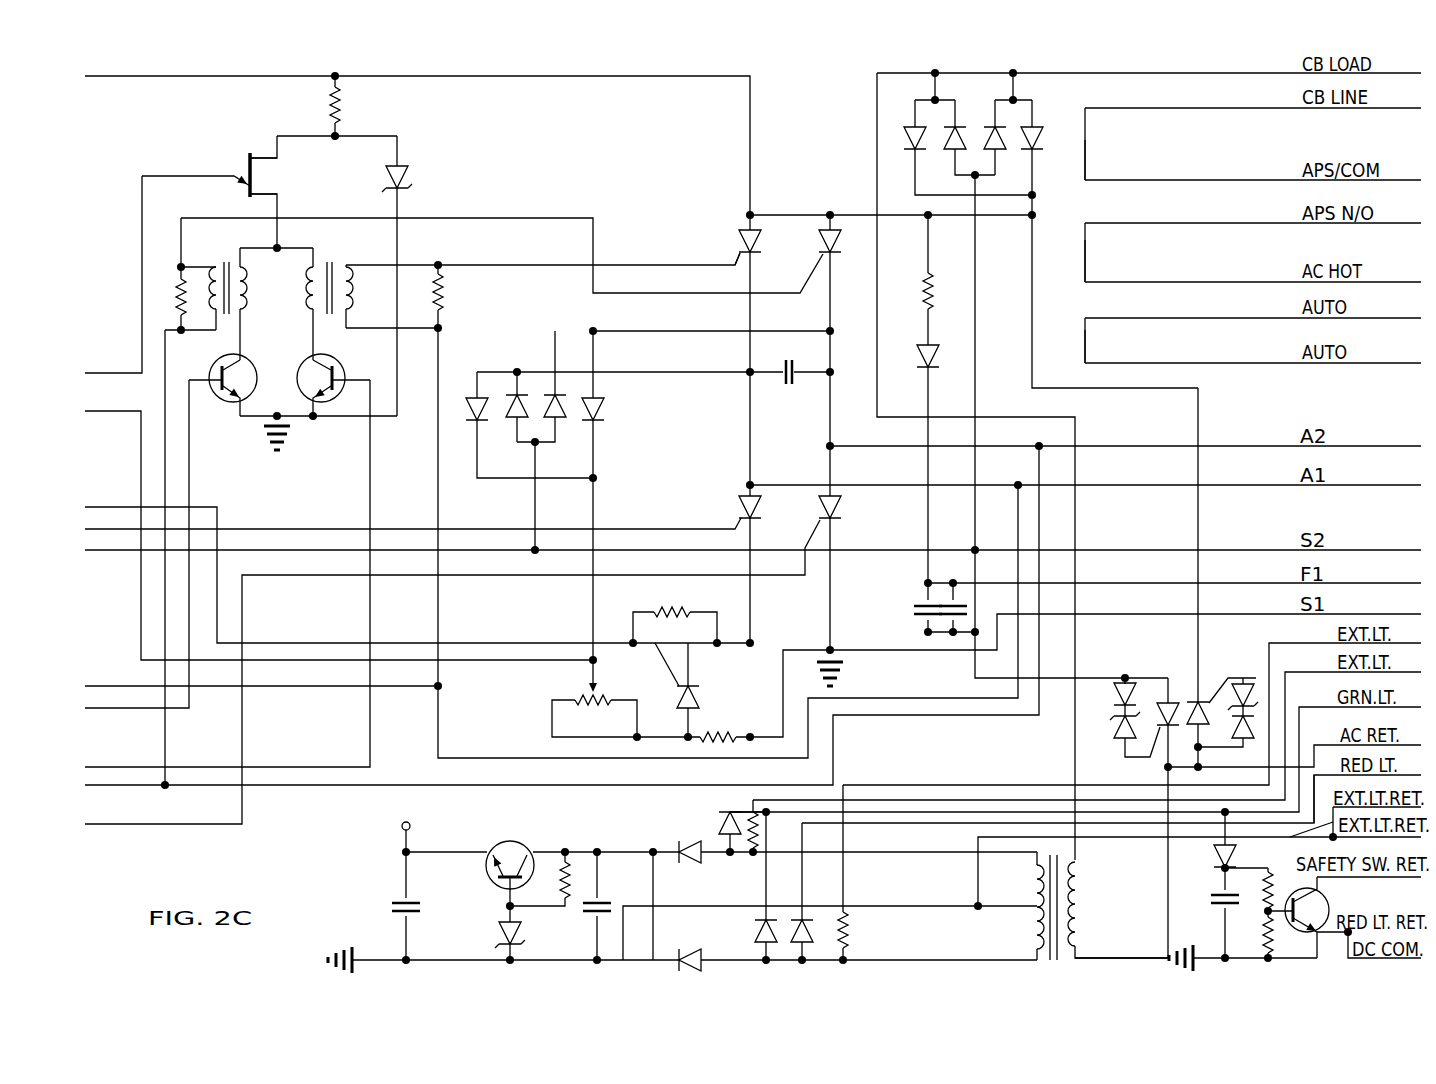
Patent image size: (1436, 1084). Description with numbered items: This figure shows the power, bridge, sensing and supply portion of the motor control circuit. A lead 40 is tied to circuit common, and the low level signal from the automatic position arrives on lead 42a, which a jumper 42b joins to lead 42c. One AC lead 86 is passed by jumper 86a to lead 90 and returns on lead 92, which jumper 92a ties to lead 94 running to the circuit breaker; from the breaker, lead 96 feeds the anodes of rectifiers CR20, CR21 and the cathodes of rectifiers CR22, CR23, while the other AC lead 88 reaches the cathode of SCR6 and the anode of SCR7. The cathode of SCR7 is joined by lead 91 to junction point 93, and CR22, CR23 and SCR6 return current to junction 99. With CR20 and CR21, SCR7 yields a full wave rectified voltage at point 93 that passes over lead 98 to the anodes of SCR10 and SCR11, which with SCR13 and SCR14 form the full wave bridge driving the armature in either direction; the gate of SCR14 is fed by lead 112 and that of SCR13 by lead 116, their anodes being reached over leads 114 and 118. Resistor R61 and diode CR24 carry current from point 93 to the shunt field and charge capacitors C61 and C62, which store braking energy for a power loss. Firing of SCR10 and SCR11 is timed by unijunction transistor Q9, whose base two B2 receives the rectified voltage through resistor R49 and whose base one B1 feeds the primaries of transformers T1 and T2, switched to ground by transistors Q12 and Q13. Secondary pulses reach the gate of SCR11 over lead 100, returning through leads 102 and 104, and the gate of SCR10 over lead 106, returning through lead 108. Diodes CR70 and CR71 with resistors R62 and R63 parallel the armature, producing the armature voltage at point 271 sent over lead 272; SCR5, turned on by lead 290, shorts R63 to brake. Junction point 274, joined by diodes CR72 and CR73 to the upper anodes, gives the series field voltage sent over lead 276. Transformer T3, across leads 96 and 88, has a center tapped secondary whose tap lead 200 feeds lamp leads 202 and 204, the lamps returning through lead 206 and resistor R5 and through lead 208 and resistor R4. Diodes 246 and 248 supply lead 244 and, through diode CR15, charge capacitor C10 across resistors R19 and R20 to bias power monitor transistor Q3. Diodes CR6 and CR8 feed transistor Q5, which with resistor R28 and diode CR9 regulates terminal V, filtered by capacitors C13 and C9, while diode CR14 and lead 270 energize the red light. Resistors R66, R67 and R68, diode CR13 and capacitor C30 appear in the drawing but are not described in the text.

The lead 98 is at (115, 78).
The resistor R49 is at (342, 108).
The unijunction transistor Q9 is at (239, 160).
The base 2 B2 is at (279, 159).
The base 1 B1 is at (279, 195).
The zener diode CR13 is at (402, 168).
The lead 100 is at (503, 218).
The lead 106 is at (507, 264).
The resistor R67 is at (176, 280).
The lead 102 is at (192, 346).
The transformer T1 is at (226, 255).
The second transformer T2 is at (331, 256).
The resistor R66 is at (445, 288).
The grounded emitter transistor Q12 is at (256, 362).
The grounded emitter transistor Q13 is at (340, 360).
The lead 272 is at (95, 411).
The lead 290 is at (128, 507).
The lead 112 is at (265, 529).
The lead 276 is at (125, 551).
The lead 114 is at (116, 686).
The lead 108 is at (440, 686).
The lead 118 is at (114, 787).
The lead 104 is at (280, 787).
The lead 116 is at (158, 825).
The diode CR70 is at (472, 392).
The diode CR72 is at (518, 375).
The diode CR71 is at (599, 410).
The diode CR73 is at (560, 428).
The junction point 274 is at (530, 565).
The resistor R68 is at (658, 612).
The point 271 is at (598, 661).
The silicon controlled rectifier SCR5 is at (694, 692).
The resistor R62 is at (572, 700).
The variable resistor R63 is at (725, 734).
The silicon controlled rectifier SCR10 is at (745, 236).
The silicon controlled rectifier SCR11 is at (833, 215).
The silicon controlled rectifier SCR14 is at (738, 505).
The silicon controlled rectifier SCR13 is at (843, 512).
The capacitor C30 is at (788, 384).
The lead 96 is at (1178, 76).
The rectifier CR20 is at (910, 130).
The rectifier CR22 is at (952, 150).
The rectifier CR23 is at (992, 126).
The rectifier CR21 is at (1034, 127).
The resistor R61 is at (932, 278).
The diode CR24 is at (918, 352).
The junction point 93 is at (1040, 216).
The lead 94 is at (1185, 109).
The jumper 92a is at (1087, 158).
The lead 92 is at (1227, 180).
The lead 90 is at (1218, 223).
The jumper 86a is at (1087, 258).
The AC lead 86 is at (1195, 282).
The lead 42c is at (1184, 318).
The jumper connection 42b is at (1087, 345).
The lead 42a is at (1208, 363).
The junction 99 is at (976, 550).
The capacitor C61 is at (918, 605).
The capacitor C62 is at (958, 600).
The lead 91 is at (1198, 514).
The silicon controlled rectifier SCR6 is at (1164, 690).
The silicon controlled rectifier SCR7 is at (1193, 702).
The lead 244 is at (1298, 717).
The lead 206 is at (1281, 643).
The lead 208 is at (1311, 672).
The AC lead 88 is at (1325, 745).
The logic power supply output terminal V is at (408, 826).
The capacitor C9 is at (411, 900).
The transistor Q5 is at (520, 845).
The resistor R28 is at (568, 862).
The capacitor C13 is at (602, 900).
The diode CR9 is at (498, 934).
The diode CR6 is at (700, 858).
The diode CR8 is at (697, 950).
The diode 246 is at (718, 824).
The resistor R4 is at (764, 842).
The diode 248 is at (756, 930).
The diode CR14 is at (810, 925).
The resistor R5 is at (853, 926).
The lead 270 is at (890, 824).
The lead 200 is at (1100, 837).
The transformer T3 is at (1080, 916).
The diode CR15 is at (1216, 852).
The resistor R19 is at (1262, 890).
The capacitor C10 is at (1221, 900).
The resistor R20 is at (1262, 925).
The power monitor transistor Q3 is at (1310, 917).
The lead 202 is at (1290, 838).
The lead 204 is at (1428, 870).
The lead 40 is at (1348, 950).